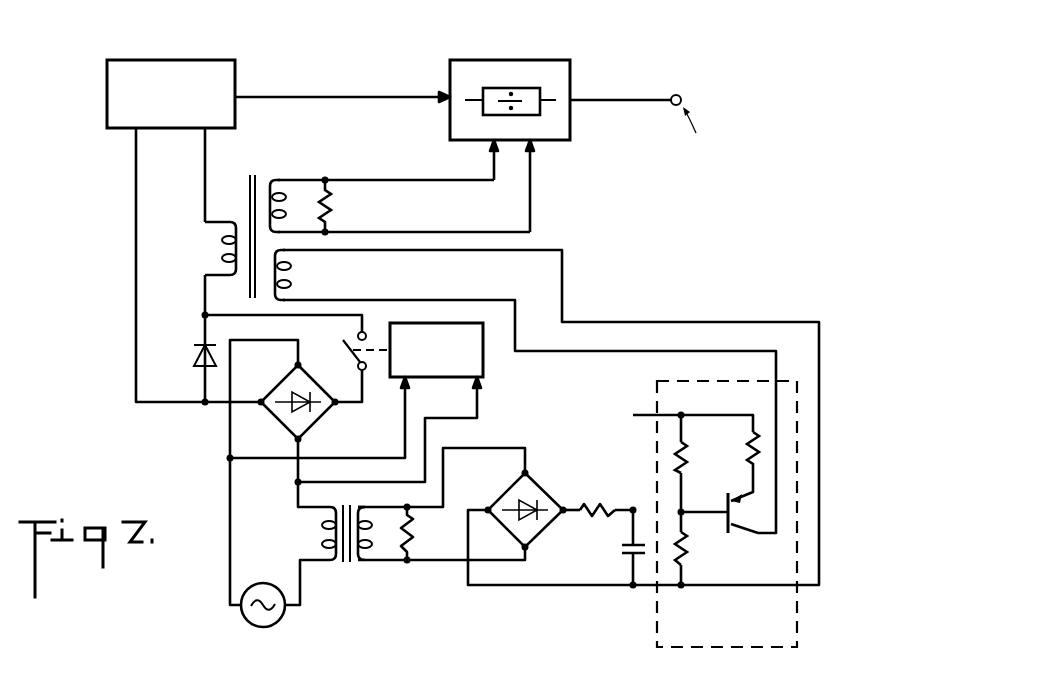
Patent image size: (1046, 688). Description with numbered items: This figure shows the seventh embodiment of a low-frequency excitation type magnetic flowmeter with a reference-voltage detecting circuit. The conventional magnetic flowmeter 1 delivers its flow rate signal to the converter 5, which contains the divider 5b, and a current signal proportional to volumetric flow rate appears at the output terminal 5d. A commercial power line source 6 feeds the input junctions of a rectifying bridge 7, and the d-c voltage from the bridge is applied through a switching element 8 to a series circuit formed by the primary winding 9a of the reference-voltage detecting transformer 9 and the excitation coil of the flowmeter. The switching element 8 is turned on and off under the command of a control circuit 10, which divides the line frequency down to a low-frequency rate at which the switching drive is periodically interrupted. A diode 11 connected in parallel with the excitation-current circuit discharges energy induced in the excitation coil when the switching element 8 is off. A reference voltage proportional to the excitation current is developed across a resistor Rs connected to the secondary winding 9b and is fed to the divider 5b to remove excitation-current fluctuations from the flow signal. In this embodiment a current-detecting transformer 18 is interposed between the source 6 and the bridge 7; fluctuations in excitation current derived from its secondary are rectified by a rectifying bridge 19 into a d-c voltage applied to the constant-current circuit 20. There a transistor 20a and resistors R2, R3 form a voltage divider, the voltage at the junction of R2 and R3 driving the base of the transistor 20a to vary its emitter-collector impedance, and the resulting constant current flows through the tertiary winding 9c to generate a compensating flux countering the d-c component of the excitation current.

The magnetic flowmeter 1 is at (225, 60).
The converter 5 is at (571, 62).
The divider 5b is at (483, 112).
The output terminal 5d is at (681, 96).
The reference-voltage detecting transformer 9 is at (254, 178).
The primary winding 9a is at (222, 251).
The secondary winding 9b is at (285, 192).
The tertiary winding 9c is at (291, 283).
The resistor Rs is at (345, 209).
The diode 11 is at (192, 362).
The switching element 8 is at (348, 352).
The control circuit 10 is at (485, 364).
The rectifying bridge 7 is at (318, 425).
The commercial power line source 6 is at (255, 628).
The current-detecting transformer 18 is at (345, 567).
The rectifying bridge 19 is at (541, 488).
The constant-current circuit 20 is at (657, 385).
The transistor 20a is at (738, 516).
The resistor R2 is at (690, 462).
The resistor R3 is at (690, 550).